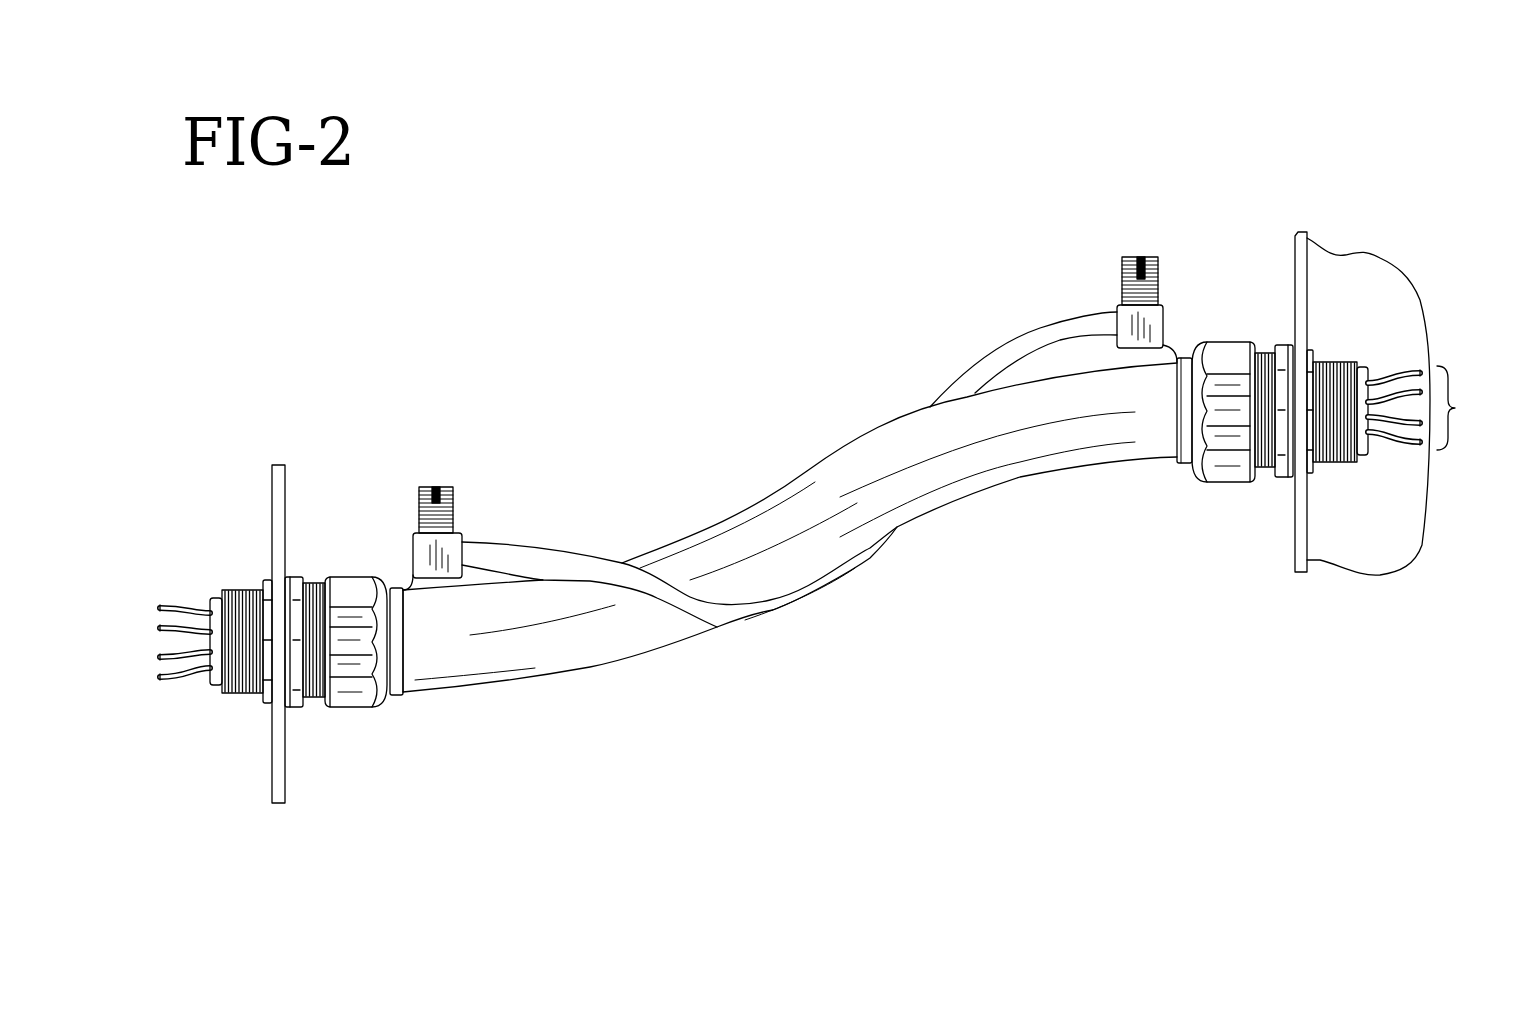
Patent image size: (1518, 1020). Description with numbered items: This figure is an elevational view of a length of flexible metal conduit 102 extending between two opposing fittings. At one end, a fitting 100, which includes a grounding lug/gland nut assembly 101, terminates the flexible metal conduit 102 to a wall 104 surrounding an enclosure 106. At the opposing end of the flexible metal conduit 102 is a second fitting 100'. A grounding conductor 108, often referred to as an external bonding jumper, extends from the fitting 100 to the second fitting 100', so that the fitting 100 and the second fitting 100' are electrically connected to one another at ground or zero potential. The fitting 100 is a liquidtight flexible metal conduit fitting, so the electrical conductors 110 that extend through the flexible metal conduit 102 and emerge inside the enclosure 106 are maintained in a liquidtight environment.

The fitting 100 is at (1220, 485).
The second fitting 100' is at (317, 706).
The grounding lug/gland nut assembly 101 is at (1175, 475).
The flexible metal conduit 102 is at (805, 473).
The wall 104 is at (1300, 572).
The enclosure 106 is at (1350, 287).
The grounding conductor 108 is at (960, 372).
The conductors 110 is at (1438, 408).